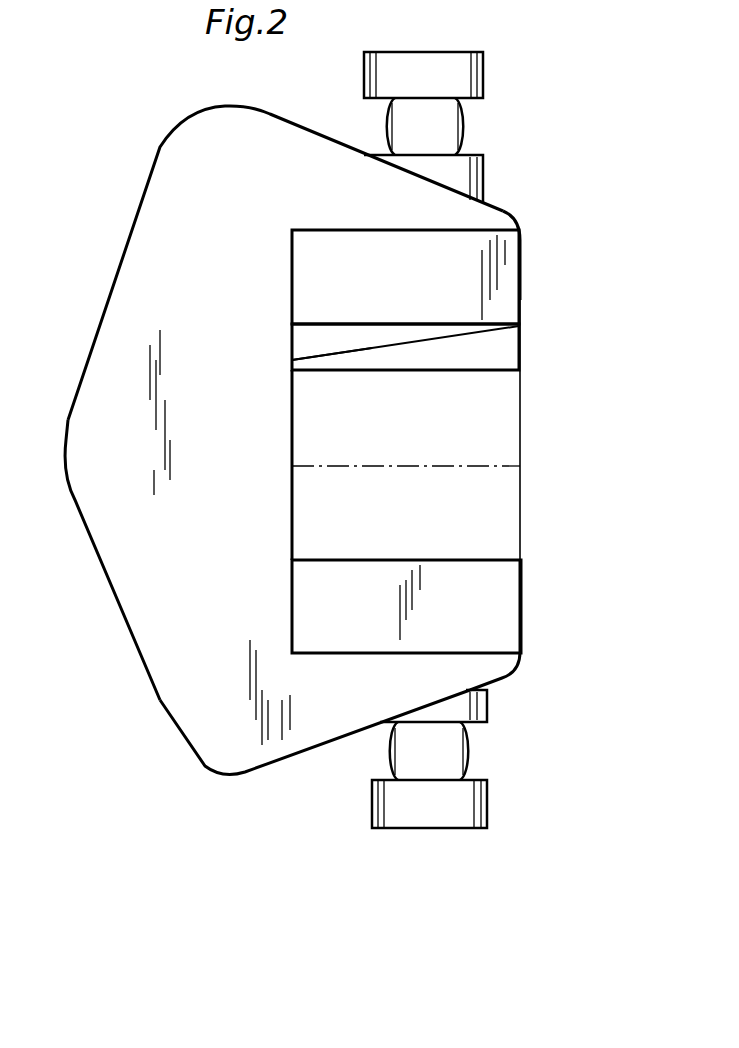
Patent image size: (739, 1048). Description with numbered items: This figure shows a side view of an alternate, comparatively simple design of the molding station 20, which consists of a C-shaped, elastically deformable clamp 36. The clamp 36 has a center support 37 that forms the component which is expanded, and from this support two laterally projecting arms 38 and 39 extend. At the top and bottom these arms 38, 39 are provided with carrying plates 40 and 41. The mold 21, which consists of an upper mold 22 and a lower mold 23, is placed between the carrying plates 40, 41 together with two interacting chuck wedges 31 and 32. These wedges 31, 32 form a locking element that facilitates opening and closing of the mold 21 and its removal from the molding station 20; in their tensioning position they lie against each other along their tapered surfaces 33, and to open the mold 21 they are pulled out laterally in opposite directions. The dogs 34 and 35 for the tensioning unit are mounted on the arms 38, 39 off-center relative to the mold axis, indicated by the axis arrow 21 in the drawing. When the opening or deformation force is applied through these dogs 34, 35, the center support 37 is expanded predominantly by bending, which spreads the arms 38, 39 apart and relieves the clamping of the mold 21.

The molding station 20 is at (111, 178).
The mold 21 is at (565, 460).
The upper mold 22 is at (465, 398).
The lower mold 23 is at (450, 523).
The chuck wedge 31 is at (407, 332).
The chuck wedge 32 is at (500, 348).
The tapered surfaces 33 is at (368, 348).
The dog 34 is at (462, 77).
The dog 35 is at (465, 808).
The C-shaped elastically deformable clamp 36 is at (112, 690).
The center support 37 is at (118, 474).
The arm 38 is at (488, 215).
The arm 39 is at (496, 657).
The carrying plate 40 is at (470, 262).
The carrying plate 41 is at (500, 612).